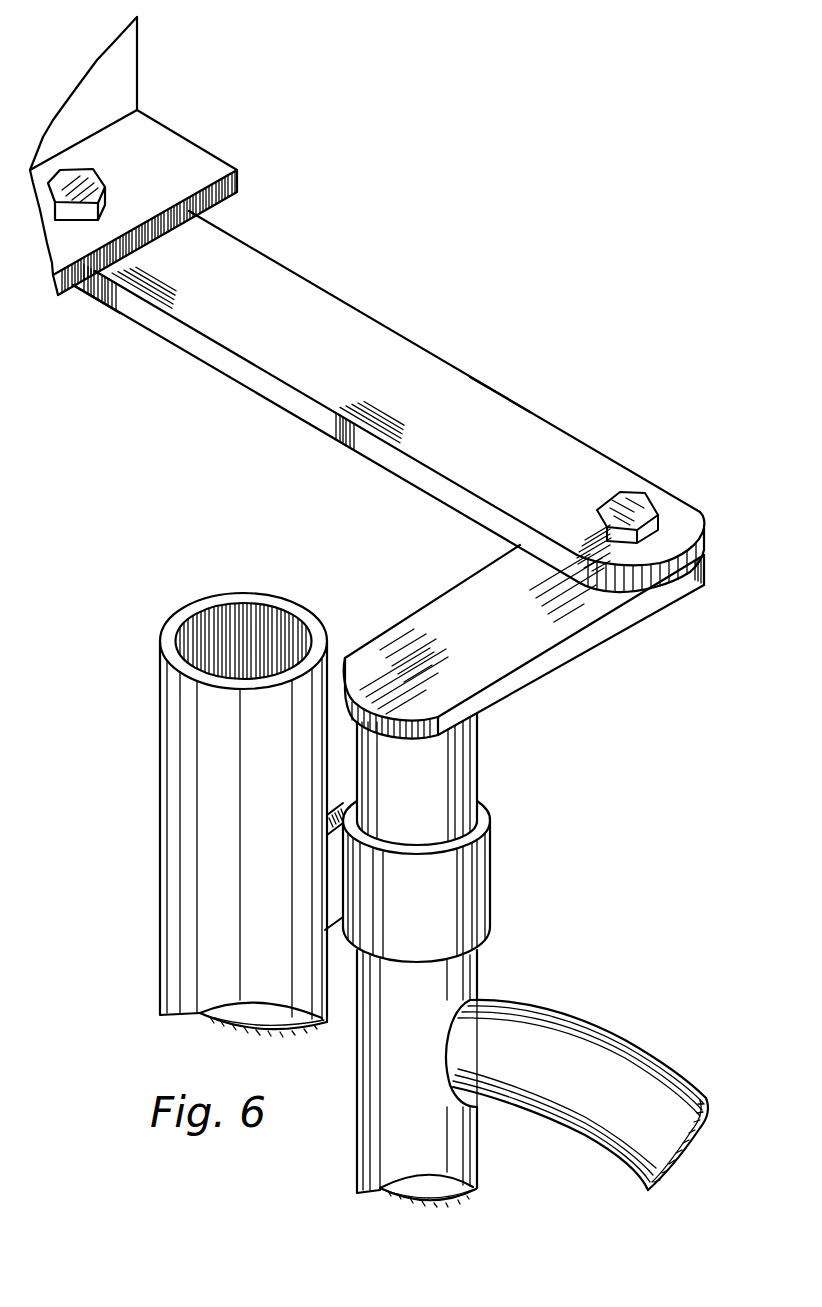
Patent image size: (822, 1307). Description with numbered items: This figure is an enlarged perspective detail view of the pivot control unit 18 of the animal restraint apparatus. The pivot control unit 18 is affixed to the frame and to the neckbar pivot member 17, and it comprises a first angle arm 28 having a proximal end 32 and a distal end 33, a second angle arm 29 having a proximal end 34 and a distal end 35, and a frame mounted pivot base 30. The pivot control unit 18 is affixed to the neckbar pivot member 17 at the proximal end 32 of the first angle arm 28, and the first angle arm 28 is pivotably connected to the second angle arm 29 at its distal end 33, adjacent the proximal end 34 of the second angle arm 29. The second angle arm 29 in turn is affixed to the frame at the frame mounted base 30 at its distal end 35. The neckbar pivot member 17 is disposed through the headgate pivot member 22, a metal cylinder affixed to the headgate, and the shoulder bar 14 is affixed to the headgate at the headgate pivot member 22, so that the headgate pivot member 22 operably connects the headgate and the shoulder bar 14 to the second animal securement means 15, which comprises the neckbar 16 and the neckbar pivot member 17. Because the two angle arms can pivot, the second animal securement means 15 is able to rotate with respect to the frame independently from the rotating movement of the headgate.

The shoulder bar 14 is at (178, 740).
The second animal securement means 15 is at (490, 972).
The neckbar 16 is at (557, 1040).
The neckbar pivot member 17 is at (463, 762).
The pivot control unit 18 is at (432, 368).
The headgate pivot member 22 is at (473, 873).
The first angle arm 28 is at (467, 602).
The second angle arm 29 is at (498, 408).
The frame mounted pivot base 30 is at (177, 153).
The proximal end of first angle arm 32 is at (365, 667).
The distal end of first angle arm 33 is at (704, 572).
The proximal end of second angle arm 34 is at (680, 523).
The distal end of second angle arm 35 is at (101, 292).